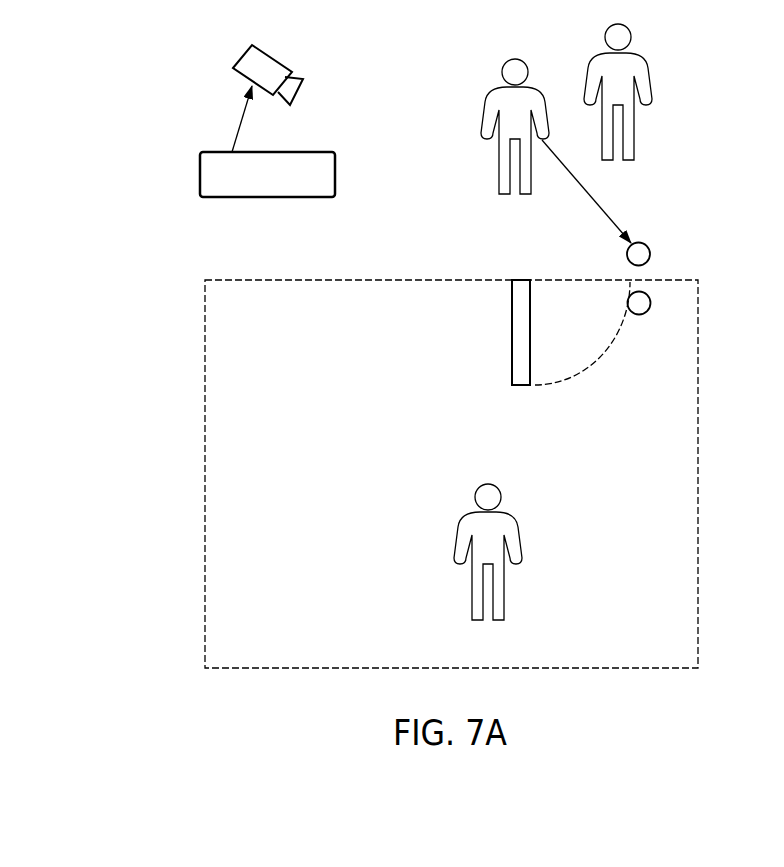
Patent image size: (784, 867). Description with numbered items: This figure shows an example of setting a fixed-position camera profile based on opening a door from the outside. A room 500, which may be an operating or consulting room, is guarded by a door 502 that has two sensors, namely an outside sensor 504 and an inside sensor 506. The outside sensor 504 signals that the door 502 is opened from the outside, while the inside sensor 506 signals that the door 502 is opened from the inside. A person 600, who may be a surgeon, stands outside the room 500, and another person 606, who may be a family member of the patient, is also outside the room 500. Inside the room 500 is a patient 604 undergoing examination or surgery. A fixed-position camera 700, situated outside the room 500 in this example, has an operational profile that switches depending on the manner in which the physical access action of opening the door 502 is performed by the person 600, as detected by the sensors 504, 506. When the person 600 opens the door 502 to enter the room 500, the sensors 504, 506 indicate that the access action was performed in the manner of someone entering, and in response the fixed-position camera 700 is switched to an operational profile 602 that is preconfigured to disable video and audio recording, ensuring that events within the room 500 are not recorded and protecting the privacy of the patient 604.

The room 500 is at (452, 280).
The door 502 is at (511, 333).
The outside sensor 504 is at (650, 255).
The inside sensor 506 is at (651, 304).
The person 600 is at (484, 118).
The person outside the room 606 is at (650, 82).
The patient 604 is at (458, 542).
The fixed-position camera 700 is at (272, 58).
The operational profile 602 is at (200, 173).